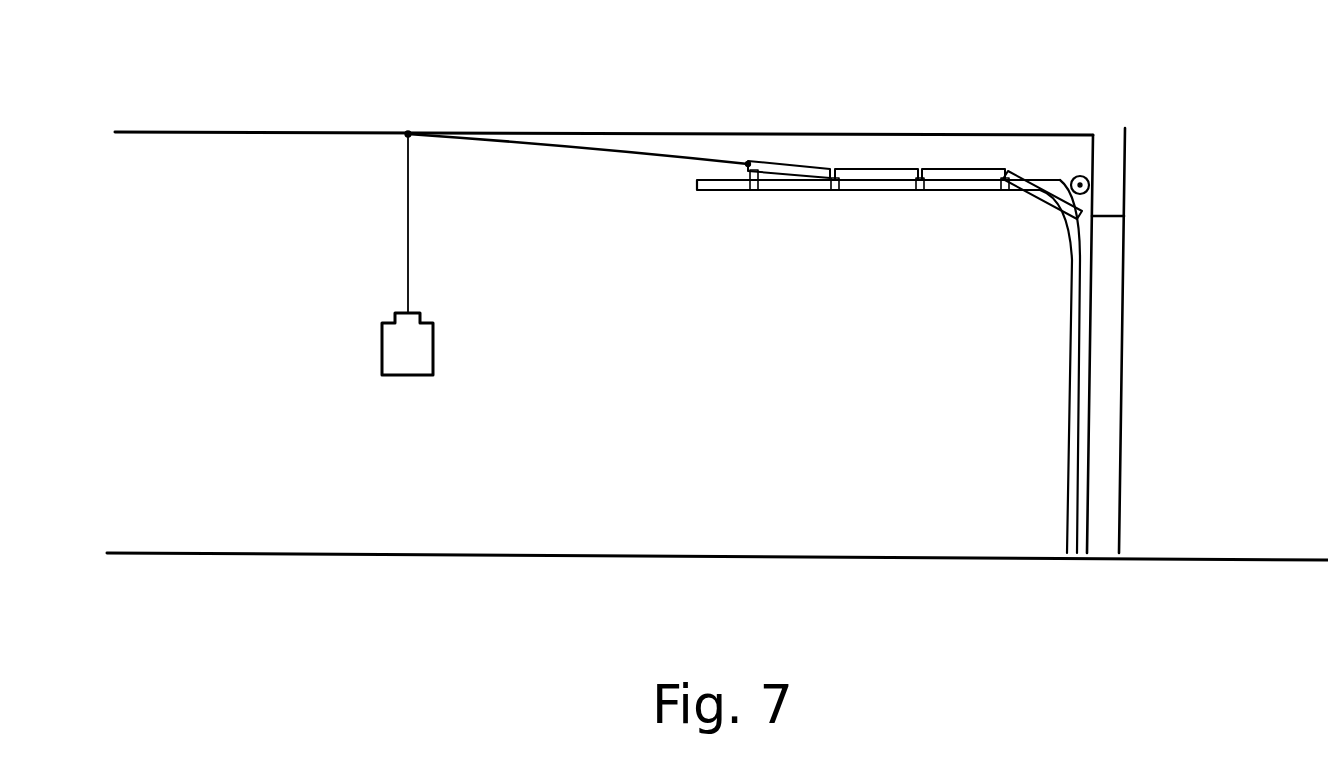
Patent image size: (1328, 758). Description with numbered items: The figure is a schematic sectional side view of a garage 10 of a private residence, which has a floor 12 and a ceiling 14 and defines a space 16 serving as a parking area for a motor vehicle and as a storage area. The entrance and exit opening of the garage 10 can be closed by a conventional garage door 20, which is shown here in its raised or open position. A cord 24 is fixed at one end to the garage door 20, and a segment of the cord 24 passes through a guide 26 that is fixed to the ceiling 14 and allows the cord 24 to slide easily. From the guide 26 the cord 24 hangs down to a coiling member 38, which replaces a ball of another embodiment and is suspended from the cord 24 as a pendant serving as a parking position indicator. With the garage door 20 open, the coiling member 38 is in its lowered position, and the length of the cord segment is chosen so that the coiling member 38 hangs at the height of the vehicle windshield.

The garage 10 is at (1204, 89).
The floor 12 is at (160, 552).
The ceiling 14 is at (211, 134).
The space 16 is at (735, 390).
The garage door 20 is at (883, 192).
The cord 24 is at (553, 150).
The guide 26 is at (408, 136).
The coiling member 38 is at (410, 378).